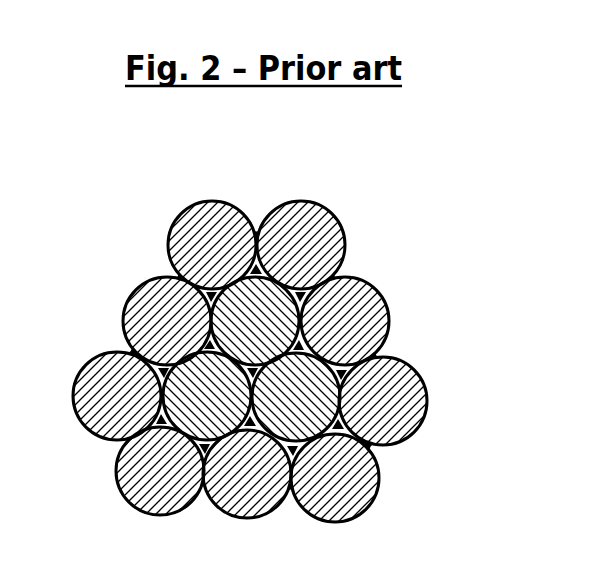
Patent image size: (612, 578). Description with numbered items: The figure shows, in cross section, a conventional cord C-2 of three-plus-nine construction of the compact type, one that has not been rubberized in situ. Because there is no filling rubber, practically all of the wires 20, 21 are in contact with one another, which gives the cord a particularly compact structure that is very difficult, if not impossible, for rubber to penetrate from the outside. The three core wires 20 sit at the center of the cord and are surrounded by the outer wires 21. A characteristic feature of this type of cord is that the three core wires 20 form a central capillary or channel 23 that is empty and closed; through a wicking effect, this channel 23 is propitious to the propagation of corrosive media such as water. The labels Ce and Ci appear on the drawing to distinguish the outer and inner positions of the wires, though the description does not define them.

The conventional 3+9 cord C-2 is at (267, 179).
The core wires 20 is at (255, 323).
The wires 21 is at (165, 318).
The central capillary or channel 23 is at (262, 381).
The external core Ce is at (110, 446).
The internal core Ci is at (277, 392).